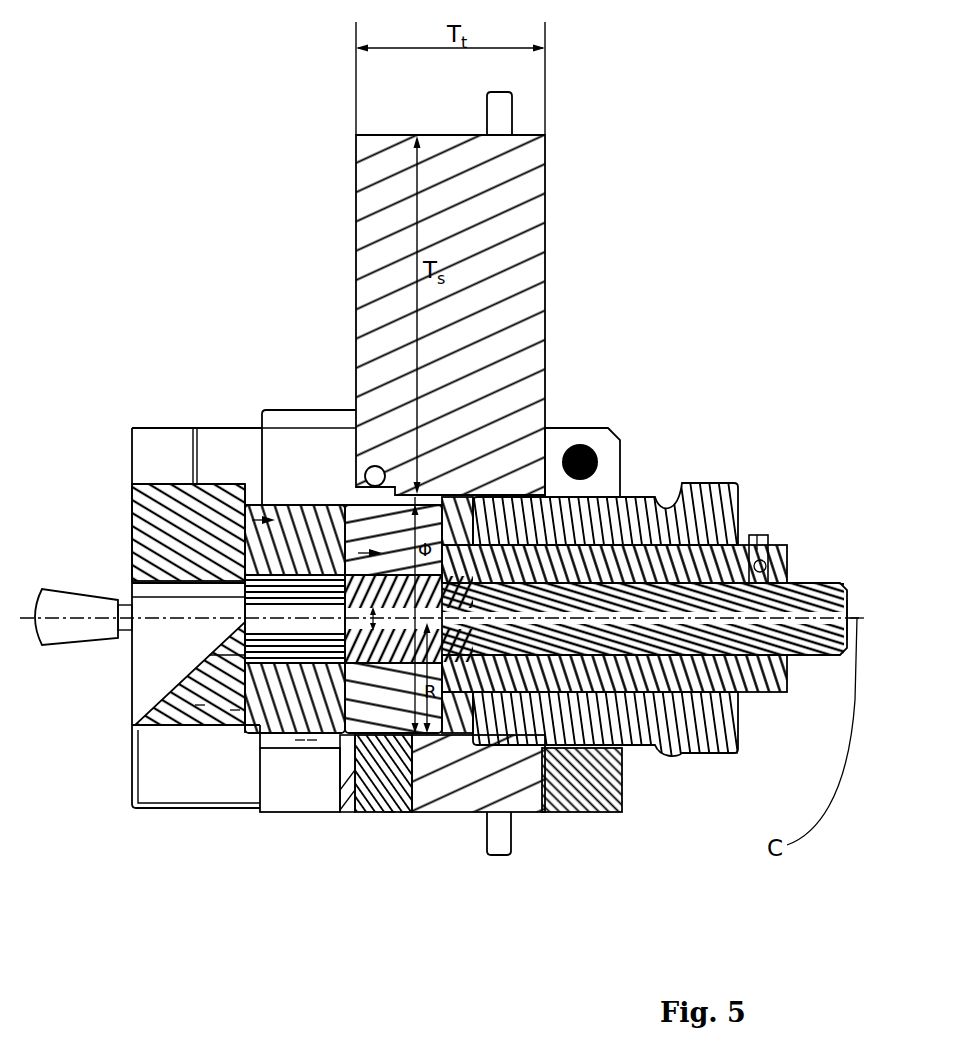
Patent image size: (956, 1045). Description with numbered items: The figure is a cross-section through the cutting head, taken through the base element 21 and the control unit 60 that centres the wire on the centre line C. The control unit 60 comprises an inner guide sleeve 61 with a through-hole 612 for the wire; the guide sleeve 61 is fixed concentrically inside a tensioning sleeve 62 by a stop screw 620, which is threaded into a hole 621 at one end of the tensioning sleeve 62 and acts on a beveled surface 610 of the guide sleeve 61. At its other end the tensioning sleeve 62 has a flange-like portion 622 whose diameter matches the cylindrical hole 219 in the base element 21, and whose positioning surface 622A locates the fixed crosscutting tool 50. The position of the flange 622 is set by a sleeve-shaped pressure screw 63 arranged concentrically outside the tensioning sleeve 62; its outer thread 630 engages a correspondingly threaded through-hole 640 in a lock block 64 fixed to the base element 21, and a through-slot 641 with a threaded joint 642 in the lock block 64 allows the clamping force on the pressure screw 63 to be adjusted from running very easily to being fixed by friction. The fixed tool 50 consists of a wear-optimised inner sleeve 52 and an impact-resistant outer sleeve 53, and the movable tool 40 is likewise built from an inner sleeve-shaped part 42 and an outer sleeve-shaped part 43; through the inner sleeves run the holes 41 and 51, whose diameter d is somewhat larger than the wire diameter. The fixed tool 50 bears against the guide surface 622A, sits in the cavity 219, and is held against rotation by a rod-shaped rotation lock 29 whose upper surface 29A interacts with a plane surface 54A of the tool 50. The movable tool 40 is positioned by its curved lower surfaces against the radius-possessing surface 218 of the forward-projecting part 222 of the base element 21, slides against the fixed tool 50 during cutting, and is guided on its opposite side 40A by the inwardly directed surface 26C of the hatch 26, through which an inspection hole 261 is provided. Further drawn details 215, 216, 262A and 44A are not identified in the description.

The base element 21 is at (502, 120).
The lower support block 215 is at (505, 835).
The ball 216 is at (375, 466).
The radius-possessing surface 218 is at (337, 748).
The hole 219 is at (399, 495).
The part of the base element 222 is at (325, 748).
The hatch 26 is at (165, 538).
The inspection hole 261 is at (132, 588).
The wedge portion 262A is at (145, 690).
The inwardly directed surface 26C is at (132, 512).
The rotation lock 29 is at (405, 812).
The upper surface 29A is at (390, 812).
The movable tool 40 is at (200, 500).
The opposite side of the movable tool 40A is at (200, 705).
The hole 41 is at (268, 503).
The inner sleeve-shaped part 42 is at (245, 603).
The outer sleeve-shaped part 43 is at (236, 710).
The flange 44A is at (312, 740).
The fixed crosscutting tool 50 is at (318, 503).
The hole 51 is at (348, 503).
The inner sleeve 52 is at (285, 760).
The outer sleeve 53 is at (300, 740).
The plane surface 54A is at (415, 812).
The control unit 60 is at (658, 612).
The guide sleeve 61 is at (815, 657).
The beveled surface 610 is at (800, 580).
The hole 612 is at (840, 603).
The tensioning sleeve 62 is at (765, 690).
The stop screw 620 is at (768, 545).
The hole 621 is at (770, 568).
The flange-like portion 622 is at (455, 495).
The positioning surface 622A is at (405, 495).
The thread 630 is at (632, 748).
The pressure screw 63 is at (735, 753).
The lock block 64 is at (590, 812).
The threaded through-hole 640 is at (688, 515).
The through-slot 641 is at (605, 437).
The threaded joint 642 is at (578, 442).
The diameter of the holes d is at (245, 622).